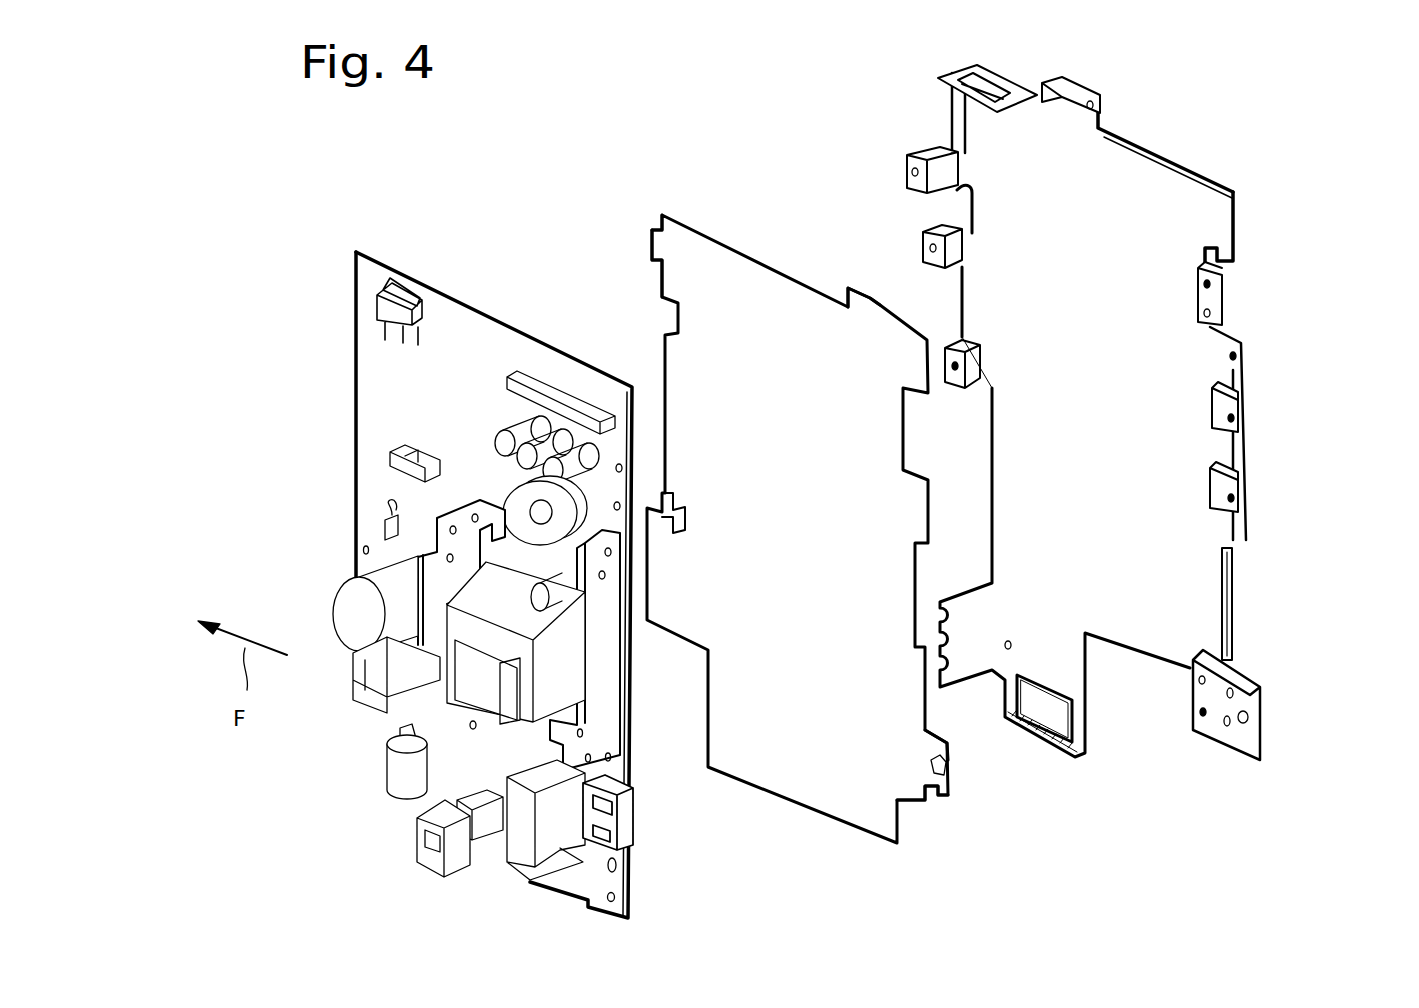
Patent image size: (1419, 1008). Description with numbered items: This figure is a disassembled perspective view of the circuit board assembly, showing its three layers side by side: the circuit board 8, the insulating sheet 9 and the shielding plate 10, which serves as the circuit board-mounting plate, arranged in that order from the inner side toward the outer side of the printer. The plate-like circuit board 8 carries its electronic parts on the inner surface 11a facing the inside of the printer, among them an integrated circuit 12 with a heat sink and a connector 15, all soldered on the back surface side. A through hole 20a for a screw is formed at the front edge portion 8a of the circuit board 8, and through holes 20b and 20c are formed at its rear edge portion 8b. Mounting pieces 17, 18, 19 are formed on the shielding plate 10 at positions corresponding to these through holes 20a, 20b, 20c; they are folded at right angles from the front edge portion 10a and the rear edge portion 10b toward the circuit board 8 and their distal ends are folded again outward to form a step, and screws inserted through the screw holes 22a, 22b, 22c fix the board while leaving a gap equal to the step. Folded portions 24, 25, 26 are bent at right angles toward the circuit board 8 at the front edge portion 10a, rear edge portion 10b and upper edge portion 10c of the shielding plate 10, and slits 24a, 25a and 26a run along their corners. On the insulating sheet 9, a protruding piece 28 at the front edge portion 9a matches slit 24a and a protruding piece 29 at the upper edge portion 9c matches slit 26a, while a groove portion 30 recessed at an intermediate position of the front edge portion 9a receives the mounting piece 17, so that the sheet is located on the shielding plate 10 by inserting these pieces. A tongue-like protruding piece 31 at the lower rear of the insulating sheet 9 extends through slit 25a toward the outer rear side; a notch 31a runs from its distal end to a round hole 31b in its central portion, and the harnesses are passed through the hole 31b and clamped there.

The circuit board 8 is at (315, 272).
The front edge portion 8a is at (355, 377).
The rear edge portion 8b is at (632, 762).
The insulating sheet 9 is at (660, 212).
The front edge portion 9a is at (657, 283).
The upper edge portion 9c is at (735, 247).
The shielding plate 10 is at (918, 135).
The front edge portion 10a is at (920, 207).
The rear edge portion 10b is at (1235, 230).
The upper edge portion 10c is at (1125, 140).
The inner surface 11a is at (465, 330).
The integrated circuit 12 is at (592, 717).
The connector 15 is at (533, 378).
The mounting piece 17 is at (950, 347).
The mounting piece 18 is at (1222, 313).
The mounting piece 19 is at (1242, 737).
The through hole 20a is at (360, 548).
The through hole 20b is at (620, 504).
The through hole 20c is at (622, 900).
The screw hole 22a is at (953, 382).
The screw hole 22b is at (1222, 280).
The screw hole 22c is at (1203, 722).
The folded portion 24 is at (948, 80).
The slit 24a is at (980, 120).
The folded portion 25 is at (1237, 567).
The slit 25a is at (1233, 623).
The folded portion 26 is at (1210, 177).
The slit 26a is at (1155, 157).
The protruding piece 28 is at (650, 243).
The protruding piece 29 is at (867, 290).
The groove portion 30 is at (687, 497).
The protruding piece 31 is at (932, 790).
The notch 31a is at (943, 768).
The round hole 31b is at (950, 743).